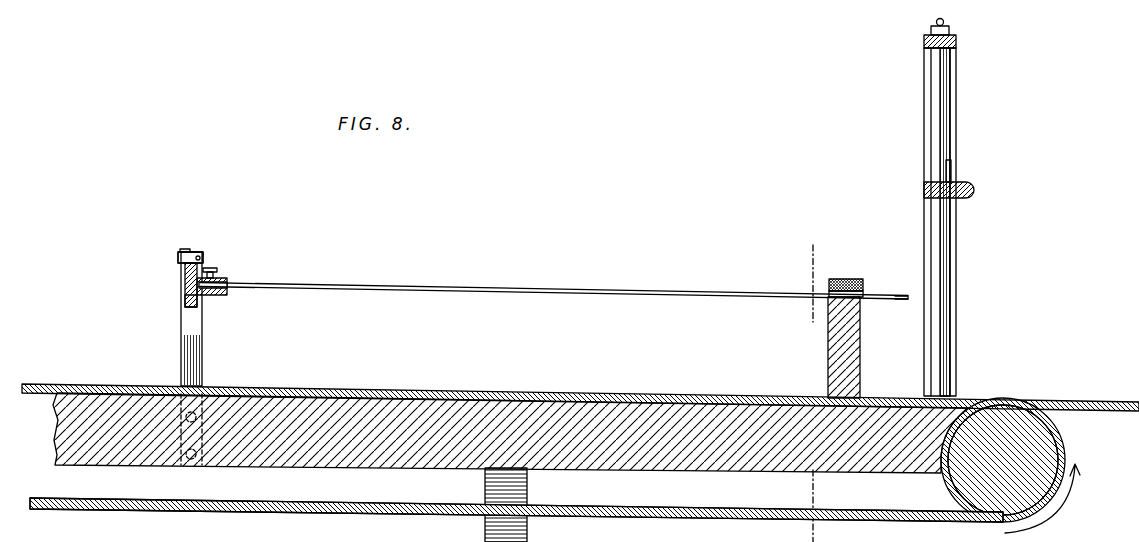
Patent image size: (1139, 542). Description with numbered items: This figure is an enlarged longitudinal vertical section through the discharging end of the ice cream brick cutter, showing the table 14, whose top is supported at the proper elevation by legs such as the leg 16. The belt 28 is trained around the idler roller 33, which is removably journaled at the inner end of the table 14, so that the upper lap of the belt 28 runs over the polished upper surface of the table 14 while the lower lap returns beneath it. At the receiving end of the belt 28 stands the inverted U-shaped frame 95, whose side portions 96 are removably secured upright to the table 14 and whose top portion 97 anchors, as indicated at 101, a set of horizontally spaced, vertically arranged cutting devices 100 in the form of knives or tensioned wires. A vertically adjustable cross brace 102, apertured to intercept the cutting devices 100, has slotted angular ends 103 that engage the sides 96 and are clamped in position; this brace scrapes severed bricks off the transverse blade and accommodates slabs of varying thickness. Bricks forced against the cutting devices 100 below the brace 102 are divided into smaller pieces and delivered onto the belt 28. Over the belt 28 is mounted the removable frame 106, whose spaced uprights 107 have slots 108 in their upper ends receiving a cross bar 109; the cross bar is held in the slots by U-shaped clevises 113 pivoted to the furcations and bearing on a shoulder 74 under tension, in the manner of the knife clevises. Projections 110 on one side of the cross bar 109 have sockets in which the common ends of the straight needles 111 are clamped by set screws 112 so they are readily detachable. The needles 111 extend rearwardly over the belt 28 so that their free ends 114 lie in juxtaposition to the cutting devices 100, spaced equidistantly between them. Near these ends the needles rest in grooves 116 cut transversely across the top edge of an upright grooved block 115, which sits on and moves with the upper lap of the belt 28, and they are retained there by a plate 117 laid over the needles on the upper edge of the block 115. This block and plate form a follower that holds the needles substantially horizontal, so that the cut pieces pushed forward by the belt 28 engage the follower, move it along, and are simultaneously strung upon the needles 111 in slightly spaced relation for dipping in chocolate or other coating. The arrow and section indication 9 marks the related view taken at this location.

The section line 9 is at (815, 254).
The table 14 is at (530, 420).
The leg 16 is at (522, 533).
The belt 28 is at (704, 394).
The idler roller 33 is at (1040, 452).
The shoulder 74 is at (181, 253).
The frame 95 is at (919, 222).
The side portions 96 is at (963, 328).
The top portion 97 is at (960, 45).
The cutting devices 100 is at (942, 137).
The anchorage 101 is at (948, 24).
The cross brace 102 is at (974, 195).
The slotted angular ends 103 is at (953, 170).
The removable frame 106 is at (173, 315).
The uprights 107 is at (200, 355).
The slots 108 is at (184, 270).
The cross bar 109 is at (200, 302).
The projections 110 is at (221, 279).
The needles 111 is at (380, 289).
The set screws 112 is at (210, 266).
The clevises 113 is at (192, 250).
The free ends 114 is at (906, 296).
The grooved block 115 is at (838, 356).
The grooves 116 is at (863, 289).
The plate 117 is at (838, 280).